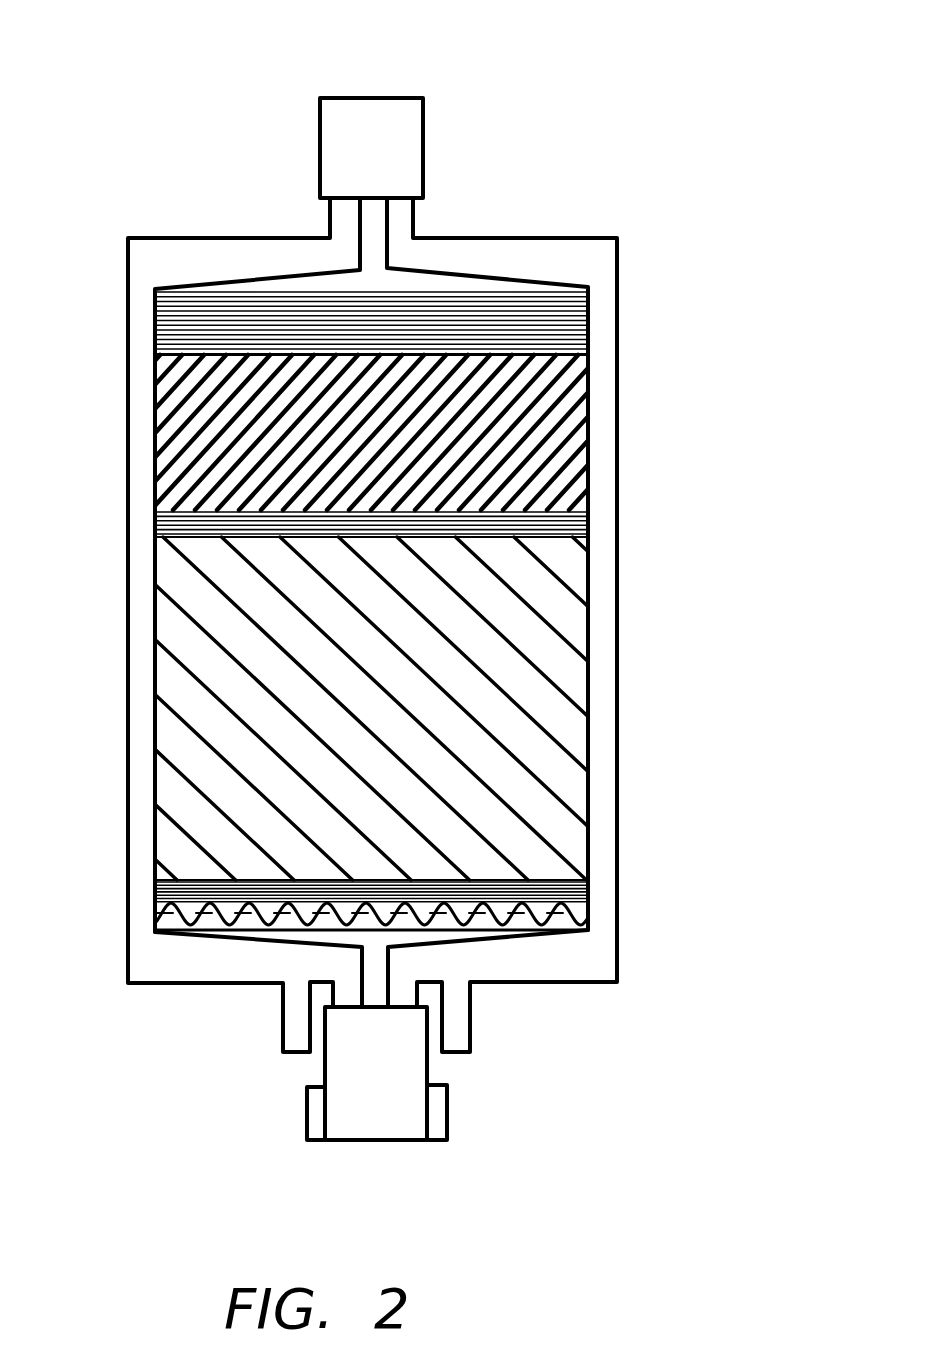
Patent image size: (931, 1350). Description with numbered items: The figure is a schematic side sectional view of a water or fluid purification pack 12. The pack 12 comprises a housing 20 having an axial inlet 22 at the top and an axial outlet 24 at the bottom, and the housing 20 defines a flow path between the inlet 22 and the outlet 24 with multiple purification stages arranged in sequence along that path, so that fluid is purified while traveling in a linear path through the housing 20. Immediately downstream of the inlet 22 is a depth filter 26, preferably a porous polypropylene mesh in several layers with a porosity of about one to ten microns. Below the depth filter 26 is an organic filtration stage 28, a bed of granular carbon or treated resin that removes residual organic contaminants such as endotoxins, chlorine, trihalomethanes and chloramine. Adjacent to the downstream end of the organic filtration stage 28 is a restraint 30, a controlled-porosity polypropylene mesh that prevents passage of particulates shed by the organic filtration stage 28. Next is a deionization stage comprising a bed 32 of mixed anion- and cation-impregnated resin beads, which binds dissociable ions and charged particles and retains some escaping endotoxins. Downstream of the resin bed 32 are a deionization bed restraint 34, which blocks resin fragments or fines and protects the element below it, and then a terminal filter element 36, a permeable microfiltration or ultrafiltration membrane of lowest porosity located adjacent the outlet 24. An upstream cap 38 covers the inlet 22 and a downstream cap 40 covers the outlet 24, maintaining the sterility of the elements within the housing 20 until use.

The fluid purification pack 12 is at (522, 47).
The housing 20 is at (618, 585).
The inlet 22 is at (372, 223).
The outlet 24 is at (375, 977).
The depth filter 26 is at (495, 307).
The organic filtration stage 28 is at (560, 400).
The restraint 30 is at (587, 513).
The deionization resin bed 32 is at (560, 690).
The deionization bed restraint 34 is at (588, 877).
The terminal filter element 36 is at (577, 912).
The upstream cap 38 is at (382, 123).
The downstream cap 40 is at (405, 1073).